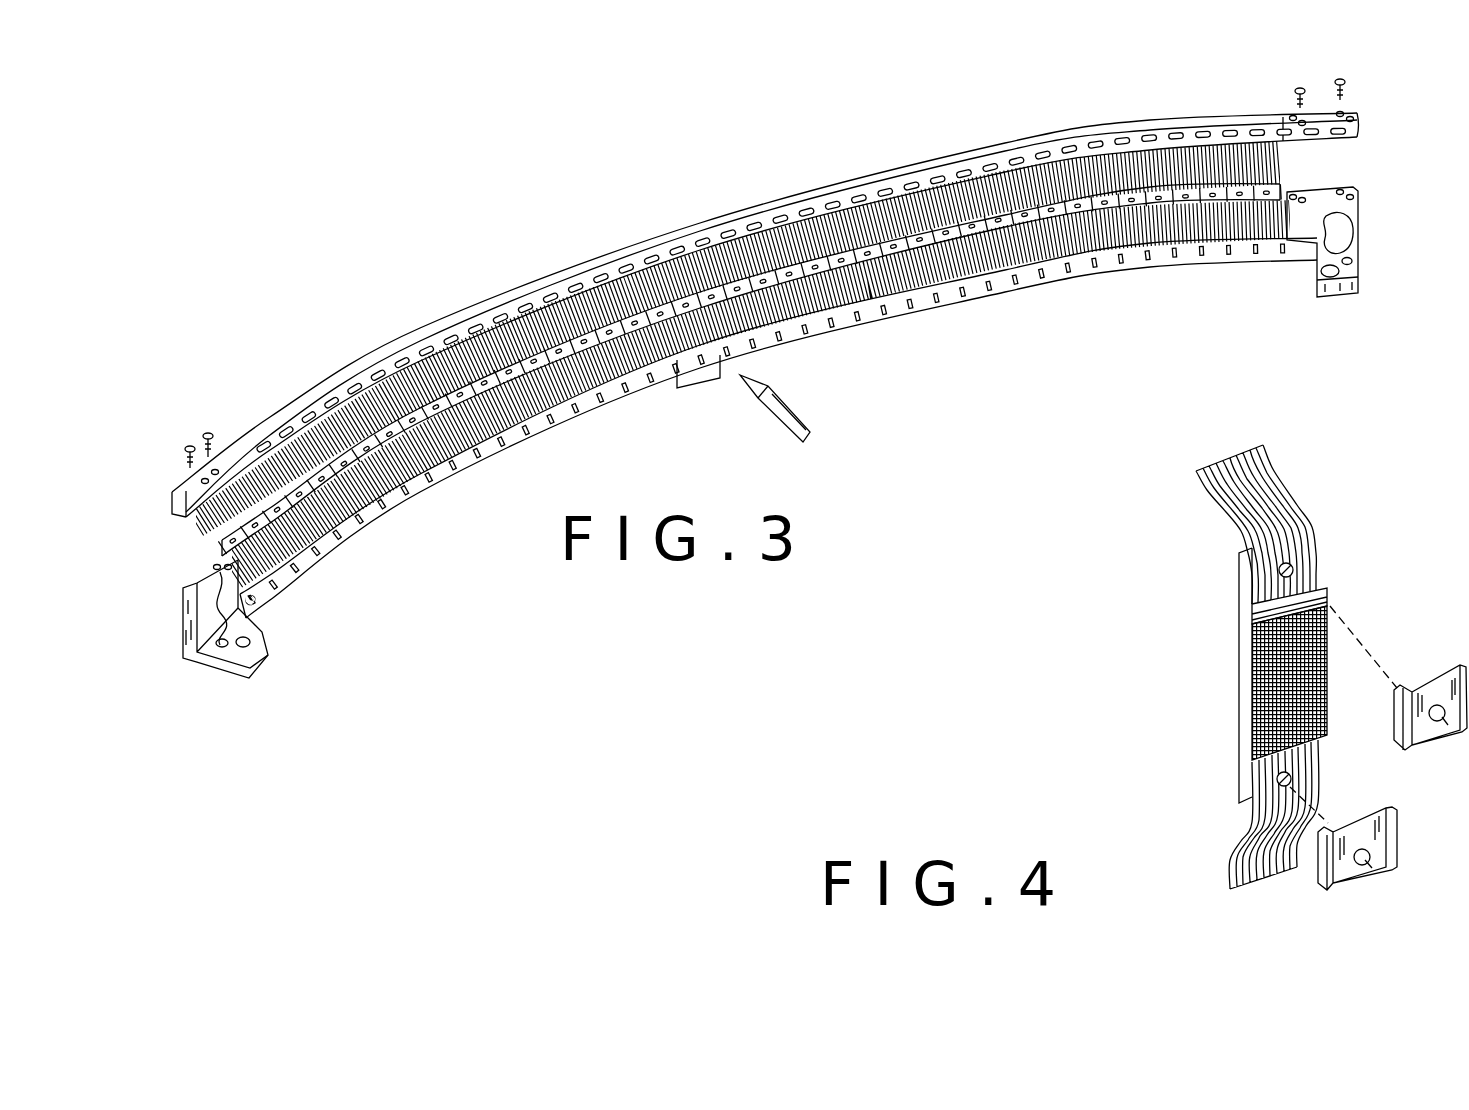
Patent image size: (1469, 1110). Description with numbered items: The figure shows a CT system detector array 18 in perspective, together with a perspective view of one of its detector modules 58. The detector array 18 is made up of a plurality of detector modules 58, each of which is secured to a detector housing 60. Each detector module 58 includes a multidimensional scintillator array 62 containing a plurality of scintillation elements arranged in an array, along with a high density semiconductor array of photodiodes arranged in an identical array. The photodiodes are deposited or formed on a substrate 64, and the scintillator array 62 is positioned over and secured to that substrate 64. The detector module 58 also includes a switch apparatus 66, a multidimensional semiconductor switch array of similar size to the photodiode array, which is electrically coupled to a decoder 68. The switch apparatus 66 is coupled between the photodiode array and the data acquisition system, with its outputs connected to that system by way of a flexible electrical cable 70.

In FIG. 3, the detector array 18 is at (722, 182).
In FIG. 3, the detector module 58 is at (387, 466).
In FIG. 4, the detector module 58 is at (1224, 755).
In FIG. 3, the detector housing 60 is at (266, 668).
In FIG. 4, the scintillator array 62 is at (1247, 691).
In FIG. 4, the substrate 64 is at (1237, 600).
In FIG. 4, the switch apparatus 66 is at (1316, 591).
In FIG. 4, the decoder 68 is at (1327, 604).
In FIG. 4, the flexible electrical cable 70 is at (1301, 501).